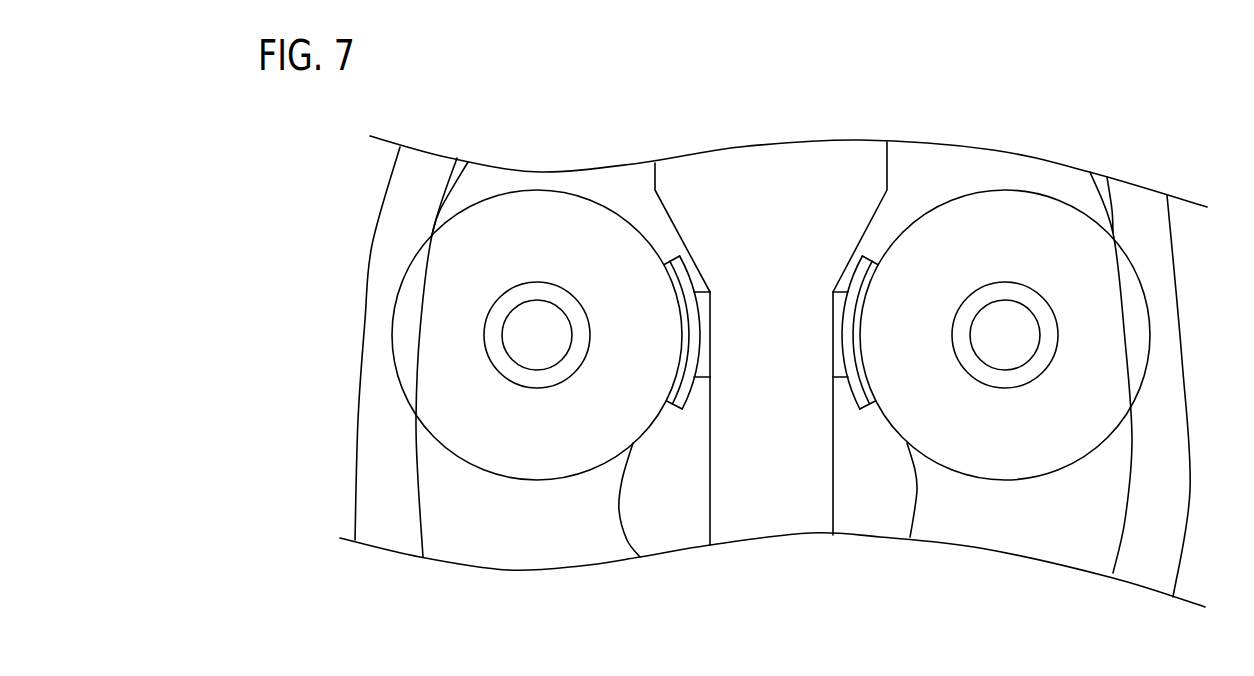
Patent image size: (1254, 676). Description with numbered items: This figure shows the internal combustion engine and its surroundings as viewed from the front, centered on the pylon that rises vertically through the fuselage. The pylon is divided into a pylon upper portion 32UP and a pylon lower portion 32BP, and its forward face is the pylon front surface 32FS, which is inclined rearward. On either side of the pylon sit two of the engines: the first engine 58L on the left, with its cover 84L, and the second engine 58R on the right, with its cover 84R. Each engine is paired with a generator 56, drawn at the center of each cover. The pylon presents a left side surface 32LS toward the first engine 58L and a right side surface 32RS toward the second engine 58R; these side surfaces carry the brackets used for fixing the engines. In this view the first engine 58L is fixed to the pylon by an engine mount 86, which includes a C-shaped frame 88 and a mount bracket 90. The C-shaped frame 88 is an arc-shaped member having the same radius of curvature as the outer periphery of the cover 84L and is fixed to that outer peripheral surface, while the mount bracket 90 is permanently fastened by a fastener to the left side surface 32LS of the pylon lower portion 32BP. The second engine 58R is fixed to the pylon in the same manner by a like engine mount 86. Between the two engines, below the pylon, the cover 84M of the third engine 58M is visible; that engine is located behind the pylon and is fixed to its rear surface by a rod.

The second engine 58R is at (515, 187).
The first engine 58L is at (1017, 183).
The third engine 58M is at (612, 518).
The generator 56 is at (528, 283).
The pylon upper portion 32UP is at (647, 200).
The right side surface 32RS is at (673, 225).
The left side surface 32LS is at (872, 222).
The pylon lower portion 32BP is at (700, 428).
The pylon front surface 32FS is at (758, 520).
The cover 84R is at (500, 445).
The cover 84L is at (1043, 447).
The cover 84M is at (865, 518).
The engine mount 86 is at (771, 337).
The C-shaped frame 88 is at (683, 383).
The mount bracket 90 is at (703, 348).